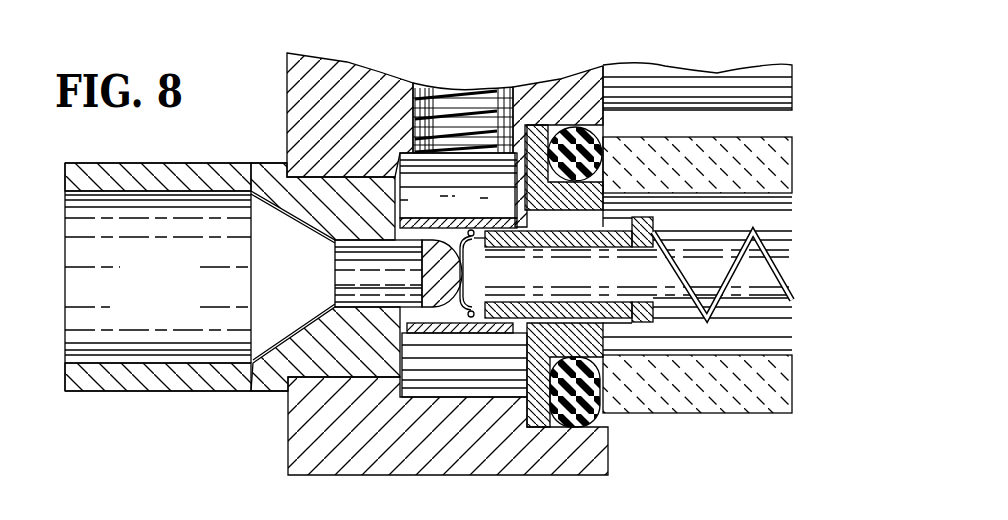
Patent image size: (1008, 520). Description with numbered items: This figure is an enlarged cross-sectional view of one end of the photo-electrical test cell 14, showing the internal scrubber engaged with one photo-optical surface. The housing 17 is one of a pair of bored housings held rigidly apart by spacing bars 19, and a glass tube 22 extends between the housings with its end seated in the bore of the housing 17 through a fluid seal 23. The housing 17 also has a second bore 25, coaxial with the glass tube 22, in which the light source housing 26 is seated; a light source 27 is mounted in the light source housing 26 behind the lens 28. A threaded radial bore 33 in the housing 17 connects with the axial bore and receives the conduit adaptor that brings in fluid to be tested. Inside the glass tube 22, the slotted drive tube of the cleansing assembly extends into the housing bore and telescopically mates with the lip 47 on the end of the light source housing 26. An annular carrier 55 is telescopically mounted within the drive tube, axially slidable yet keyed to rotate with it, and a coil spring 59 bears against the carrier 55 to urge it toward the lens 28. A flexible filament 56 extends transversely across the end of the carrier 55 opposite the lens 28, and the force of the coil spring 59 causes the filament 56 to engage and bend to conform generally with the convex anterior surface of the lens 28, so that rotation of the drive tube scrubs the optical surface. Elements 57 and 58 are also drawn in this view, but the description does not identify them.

The photo-electrical test cell 14 is at (730, 32).
The housing 17 is at (515, 475).
The spacing bar 19 is at (760, 92).
The glass tube 22 is at (720, 176).
The fluid seal 23 is at (608, 420).
The second bore 25 is at (328, 372).
The light source housing 26 is at (251, 163).
The light source 27 is at (120, 279).
The lens 28 is at (420, 285).
The threaded radial bore 33 is at (500, 88).
The lip 47 is at (418, 228).
The annular carrier 55 is at (518, 223).
The flexible filament 56 is at (437, 333).
The inner tube 57 is at (484, 242).
The gasket 58 is at (462, 226).
The coil spring 59 is at (713, 322).